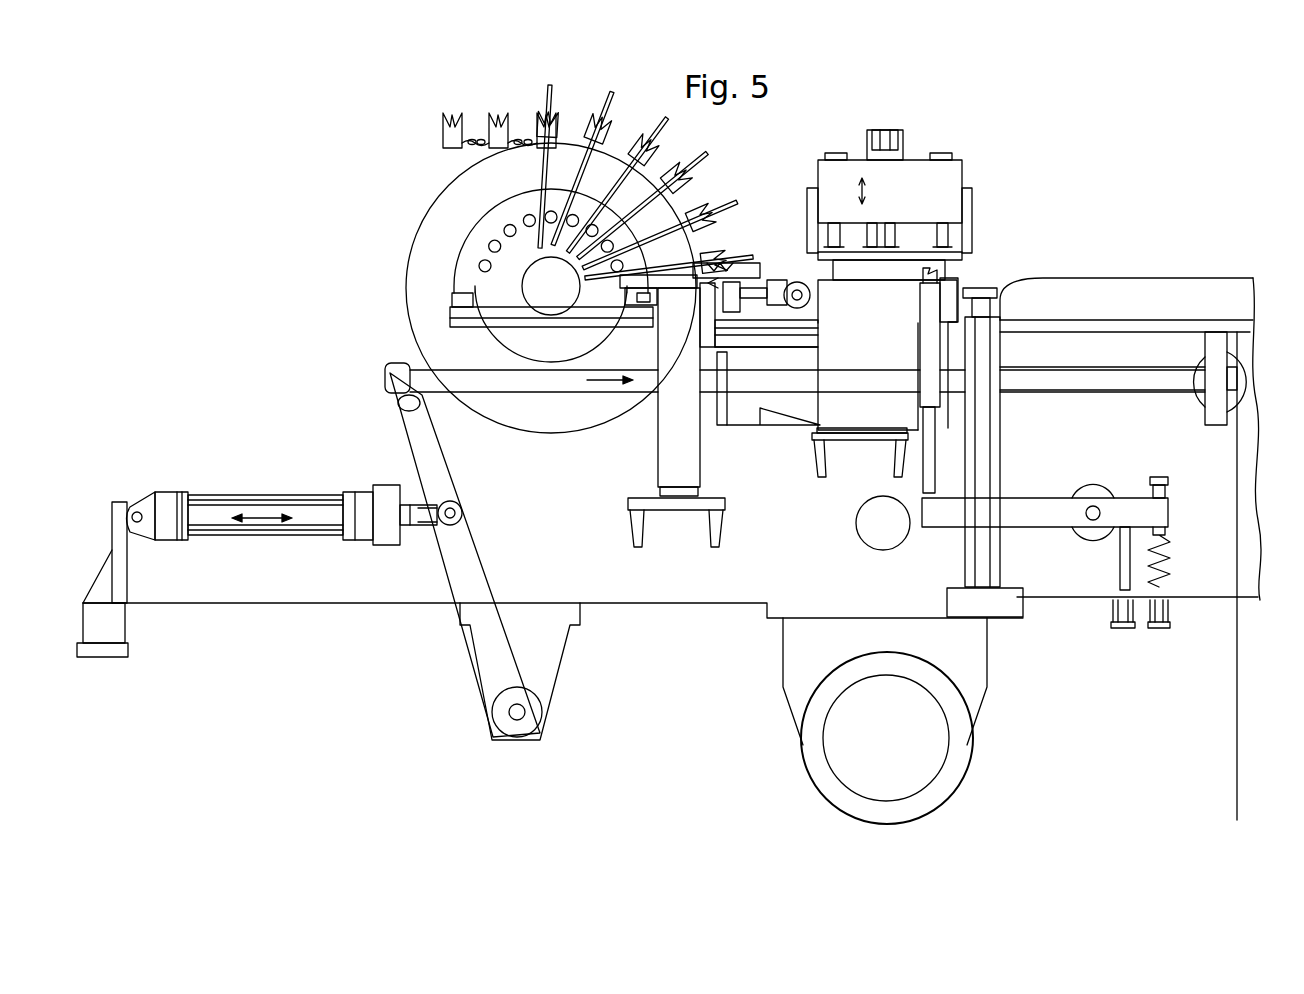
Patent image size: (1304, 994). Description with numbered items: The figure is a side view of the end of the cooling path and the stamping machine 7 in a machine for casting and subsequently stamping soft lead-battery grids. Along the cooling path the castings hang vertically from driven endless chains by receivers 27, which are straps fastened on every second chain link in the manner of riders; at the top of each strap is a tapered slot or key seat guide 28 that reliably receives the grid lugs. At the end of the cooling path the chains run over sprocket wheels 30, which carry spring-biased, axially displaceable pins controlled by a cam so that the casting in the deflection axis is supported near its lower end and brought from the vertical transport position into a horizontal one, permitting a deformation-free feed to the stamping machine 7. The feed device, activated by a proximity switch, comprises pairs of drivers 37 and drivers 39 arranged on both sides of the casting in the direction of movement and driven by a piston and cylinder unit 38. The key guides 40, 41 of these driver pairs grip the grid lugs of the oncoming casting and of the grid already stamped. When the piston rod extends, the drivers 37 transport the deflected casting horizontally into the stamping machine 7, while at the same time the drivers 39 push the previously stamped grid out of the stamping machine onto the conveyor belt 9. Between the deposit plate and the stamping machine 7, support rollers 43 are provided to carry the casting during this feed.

The stamping machine 7 is at (847, 307).
The conveyor belt 9 is at (1157, 298).
The receivers 27 is at (443, 128).
The key seat guide 28 is at (456, 112).
The sprocket wheels 30 is at (440, 232).
The drivers 37 is at (706, 308).
The piston and cylinder unit 38 is at (262, 498).
The drivers 39 is at (927, 312).
The key guide 40 is at (716, 300).
The key guide 41 is at (928, 268).
The support rollers 43 is at (778, 287).